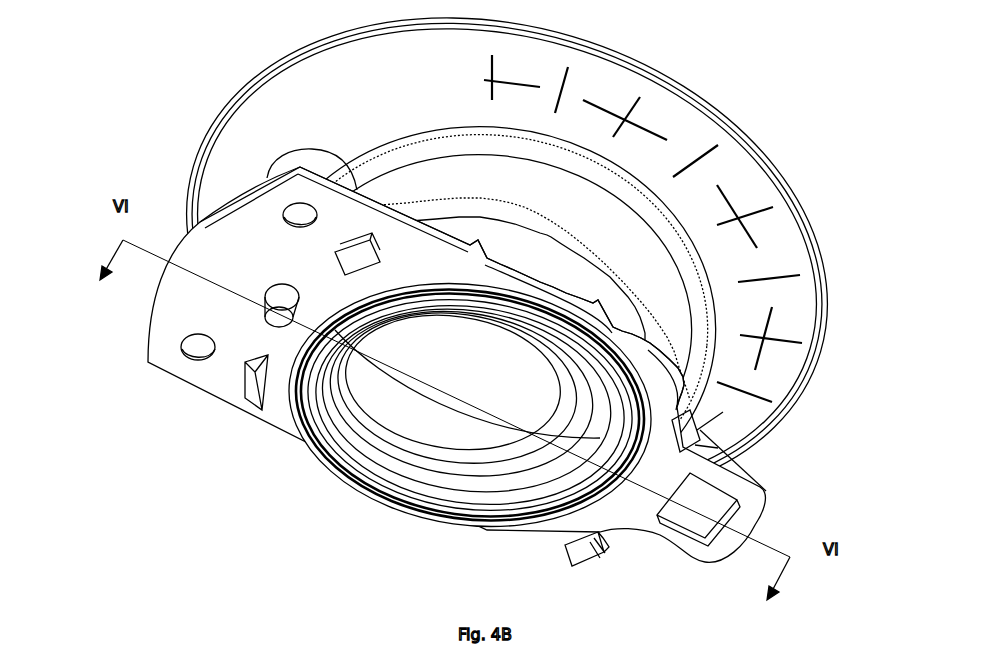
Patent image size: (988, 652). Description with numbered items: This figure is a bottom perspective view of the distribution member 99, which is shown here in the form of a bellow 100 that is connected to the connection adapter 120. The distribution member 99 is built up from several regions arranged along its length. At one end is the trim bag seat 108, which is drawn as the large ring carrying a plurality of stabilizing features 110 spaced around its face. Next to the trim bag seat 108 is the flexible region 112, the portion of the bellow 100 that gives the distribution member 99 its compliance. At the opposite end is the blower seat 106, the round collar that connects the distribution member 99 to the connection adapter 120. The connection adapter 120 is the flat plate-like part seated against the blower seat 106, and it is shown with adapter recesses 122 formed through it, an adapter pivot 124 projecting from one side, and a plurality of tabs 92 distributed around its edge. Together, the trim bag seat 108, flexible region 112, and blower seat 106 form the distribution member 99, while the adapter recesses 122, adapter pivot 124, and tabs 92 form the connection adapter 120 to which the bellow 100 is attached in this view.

The distribution member 99 is at (815, 114).
The bellow 100 is at (867, 75).
The trim bag seat 108 is at (280, 64).
The stabilizing features 110 is at (640, 100).
The flexible region 112 is at (724, 291).
The blower seat 106 is at (394, 357).
The connection adapter 120 is at (207, 387).
The adapter recesses 122 is at (287, 215).
The adapter pivot 124 is at (747, 498).
The tabs 92 is at (700, 428).